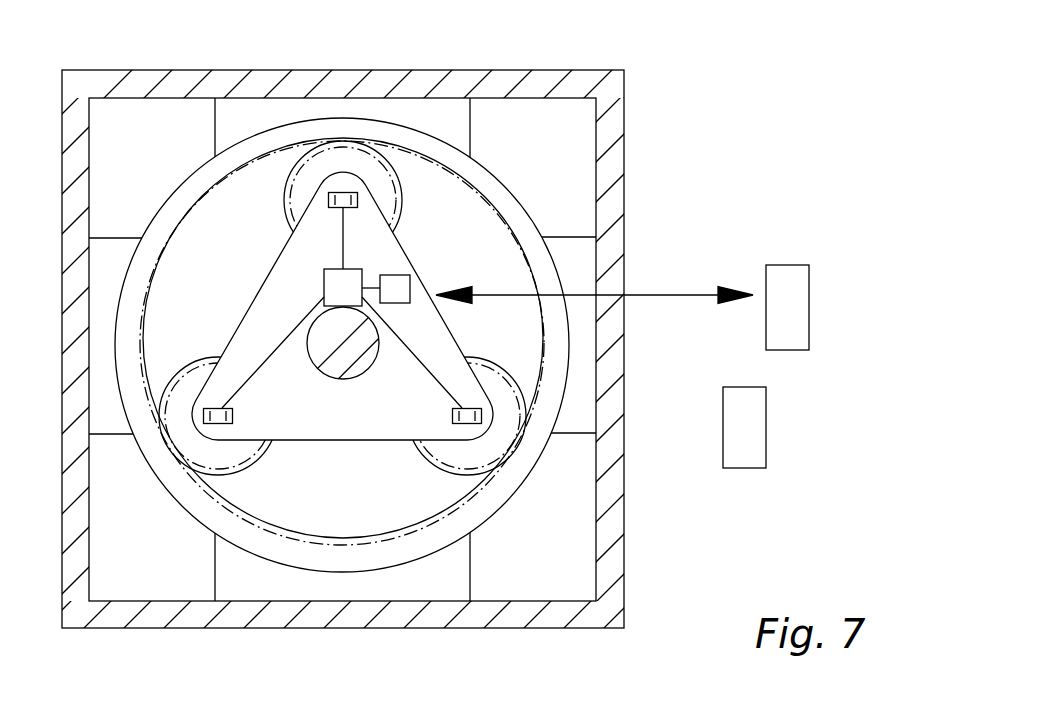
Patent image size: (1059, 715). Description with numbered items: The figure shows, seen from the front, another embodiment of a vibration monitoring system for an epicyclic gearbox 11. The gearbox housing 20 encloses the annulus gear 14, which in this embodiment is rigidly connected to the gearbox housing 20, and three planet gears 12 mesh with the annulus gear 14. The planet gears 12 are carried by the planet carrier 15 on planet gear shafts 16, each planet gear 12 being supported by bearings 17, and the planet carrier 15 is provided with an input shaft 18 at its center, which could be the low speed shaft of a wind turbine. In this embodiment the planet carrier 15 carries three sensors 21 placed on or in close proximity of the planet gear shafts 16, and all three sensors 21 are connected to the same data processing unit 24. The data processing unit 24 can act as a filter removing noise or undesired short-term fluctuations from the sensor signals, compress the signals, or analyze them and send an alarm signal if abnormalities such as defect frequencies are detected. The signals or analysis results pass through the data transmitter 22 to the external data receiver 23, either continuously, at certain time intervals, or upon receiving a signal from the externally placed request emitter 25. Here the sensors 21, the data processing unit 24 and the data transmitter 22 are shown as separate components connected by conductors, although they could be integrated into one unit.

The epicyclic gearbox 11 is at (702, 60).
The planet gears 12 is at (380, 168).
The annulus gear 14 is at (482, 180).
The planet carrier 15 is at (302, 425).
The shaft 16 is at (350, 190).
The bearings 17 is at (340, 190).
The input shaft 18 is at (347, 353).
The gearbox housing 20 is at (612, 460).
The sensors 21 is at (393, 318).
The data transmitter 22 is at (402, 282).
The external data receiver 23 is at (790, 315).
The data processing unit 24 is at (350, 285).
The request emitter 25 is at (743, 443).